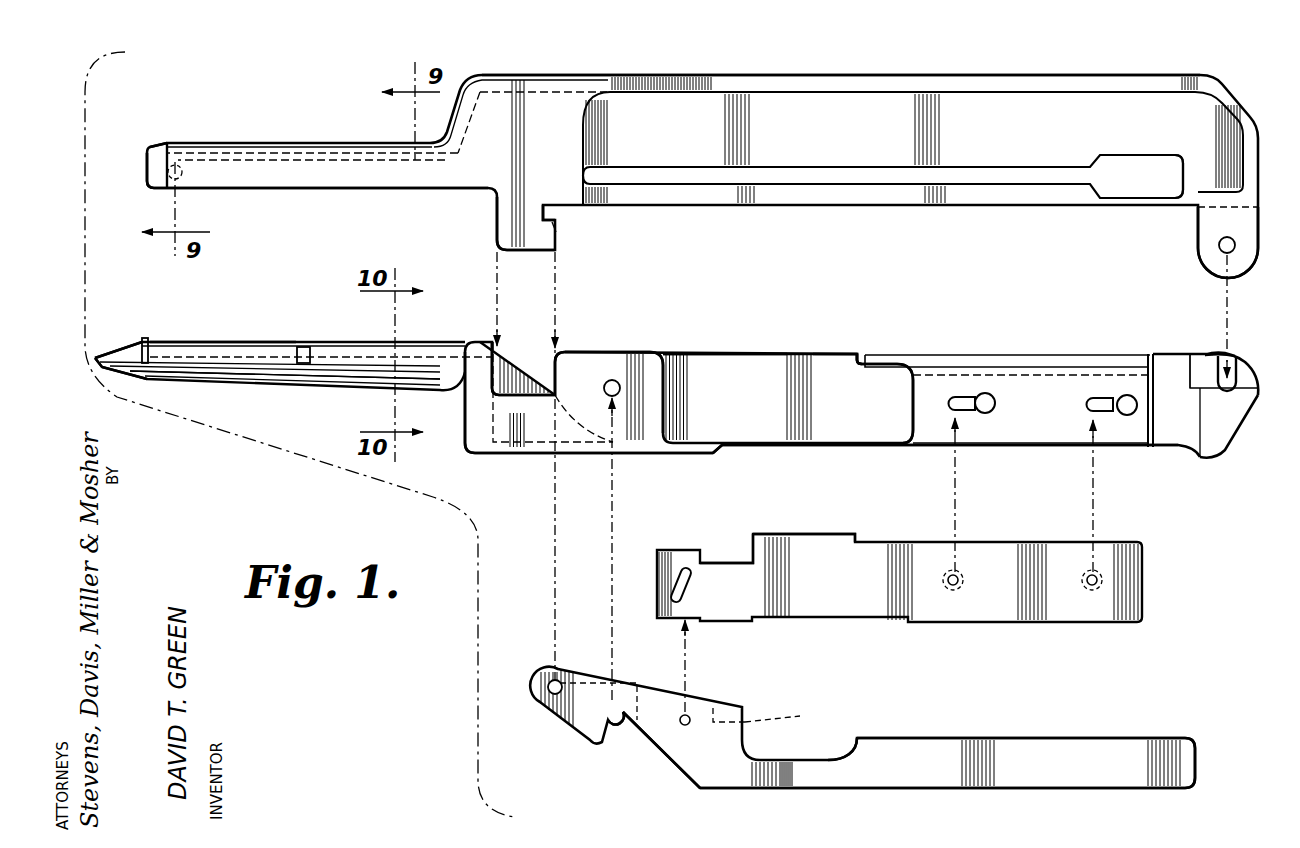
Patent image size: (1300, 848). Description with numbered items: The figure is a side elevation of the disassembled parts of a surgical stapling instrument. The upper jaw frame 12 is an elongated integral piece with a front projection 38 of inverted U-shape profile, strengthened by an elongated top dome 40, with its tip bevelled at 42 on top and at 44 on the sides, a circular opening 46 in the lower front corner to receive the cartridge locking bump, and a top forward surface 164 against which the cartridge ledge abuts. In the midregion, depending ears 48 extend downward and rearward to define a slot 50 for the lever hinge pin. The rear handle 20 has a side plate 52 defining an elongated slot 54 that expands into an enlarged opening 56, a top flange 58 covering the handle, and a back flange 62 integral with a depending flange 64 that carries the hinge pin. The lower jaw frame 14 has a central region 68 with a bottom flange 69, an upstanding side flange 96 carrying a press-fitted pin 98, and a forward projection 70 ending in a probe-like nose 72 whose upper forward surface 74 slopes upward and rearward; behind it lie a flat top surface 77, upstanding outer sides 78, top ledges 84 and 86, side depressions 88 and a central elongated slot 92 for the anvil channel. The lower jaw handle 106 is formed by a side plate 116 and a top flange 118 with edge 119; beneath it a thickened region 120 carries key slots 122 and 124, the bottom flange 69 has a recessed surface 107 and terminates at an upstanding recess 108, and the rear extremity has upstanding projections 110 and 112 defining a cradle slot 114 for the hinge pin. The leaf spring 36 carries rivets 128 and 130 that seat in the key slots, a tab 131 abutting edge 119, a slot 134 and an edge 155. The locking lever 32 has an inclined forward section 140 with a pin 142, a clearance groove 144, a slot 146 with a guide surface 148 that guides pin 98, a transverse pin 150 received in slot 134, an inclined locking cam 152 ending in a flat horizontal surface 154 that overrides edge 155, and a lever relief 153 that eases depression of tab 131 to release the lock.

The upper jaw frame 12 is at (558, 73).
The lower jaw frame 14 is at (778, 347).
The handle 20 is at (920, 74).
The locking lever 32 is at (1018, 740).
The leaf spring 36 is at (848, 600).
The front projection 38 is at (294, 180).
The top dome 40 is at (356, 143).
The bevelled top 42 is at (163, 143).
The bevelled sides 44 is at (158, 170).
The circular opening 46 is at (163, 190).
The depending ears 48 is at (533, 242).
The slot 50 is at (556, 210).
The side plate 52 is at (992, 115).
The elongated slot 54 is at (853, 186).
The enlarged opening 56 is at (1138, 190).
The top flange 58 is at (716, 80).
The back flange 62 is at (1240, 113).
The depending flange 64 is at (1212, 262).
The central region 68 is at (537, 455).
The bottom flange 69 is at (830, 447).
The forward projection 70 is at (285, 384).
The probe-like nose 72 is at (120, 370).
The upper forward surface 74 is at (115, 347).
The flat top surface 77 is at (240, 342).
The outer sides 78 is at (360, 353).
The top ledge 84 is at (149, 340).
The top ledge 86 is at (478, 342).
The side depressions 88 is at (303, 347).
The elongated slot 92 is at (336, 380).
The side flange 96 is at (598, 352).
The pin 98 is at (618, 383).
The lower jaw handle 106 is at (833, 352).
The recessed surface 107 is at (750, 452).
The upstanding recess 108 is at (1172, 440).
The upstanding projection 110 is at (1205, 360).
The upstanding projection 112 is at (1245, 370).
The cradle slot 114 is at (1244, 414).
The side plate 116 is at (727, 362).
The top flange 118 is at (940, 358).
The edge 119 is at (860, 356).
The thickened region 120 is at (1040, 430).
The key slot 122 is at (992, 403).
The key slot 124 is at (1130, 398).
The rivet 128 is at (953, 592).
The rivet 130 is at (1092, 592).
The tab 131 is at (808, 542).
The slot 134 is at (683, 567).
The forward section 140 is at (598, 656).
The pin 142 is at (546, 706).
The clearance groove 144 is at (549, 672).
The slot 146 is at (620, 723).
The guide surface 148 is at (672, 765).
The transverse pin 150 is at (692, 716).
The inclined locking cam 152 is at (743, 704).
The lever relief 153 is at (838, 758).
The flat horizontal surface 154 is at (805, 716).
The edge 155 is at (740, 560).
The top forward surface 164 is at (150, 150).